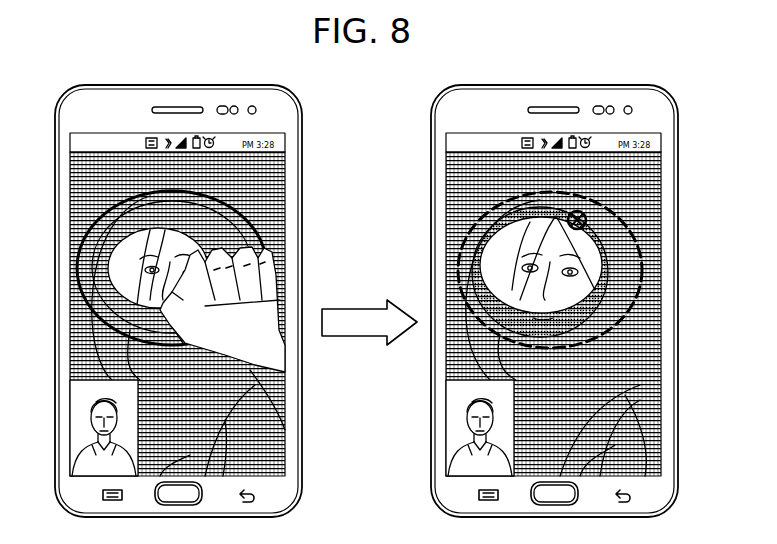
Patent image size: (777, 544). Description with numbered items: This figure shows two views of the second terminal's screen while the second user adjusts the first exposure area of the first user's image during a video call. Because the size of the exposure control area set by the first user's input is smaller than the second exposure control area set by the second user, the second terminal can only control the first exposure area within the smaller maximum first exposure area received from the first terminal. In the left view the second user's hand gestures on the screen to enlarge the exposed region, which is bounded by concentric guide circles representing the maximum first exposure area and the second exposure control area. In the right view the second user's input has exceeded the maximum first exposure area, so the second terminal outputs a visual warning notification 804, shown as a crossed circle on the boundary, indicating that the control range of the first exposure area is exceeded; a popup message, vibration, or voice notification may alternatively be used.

The visual warning notification 804 is at (590, 216).